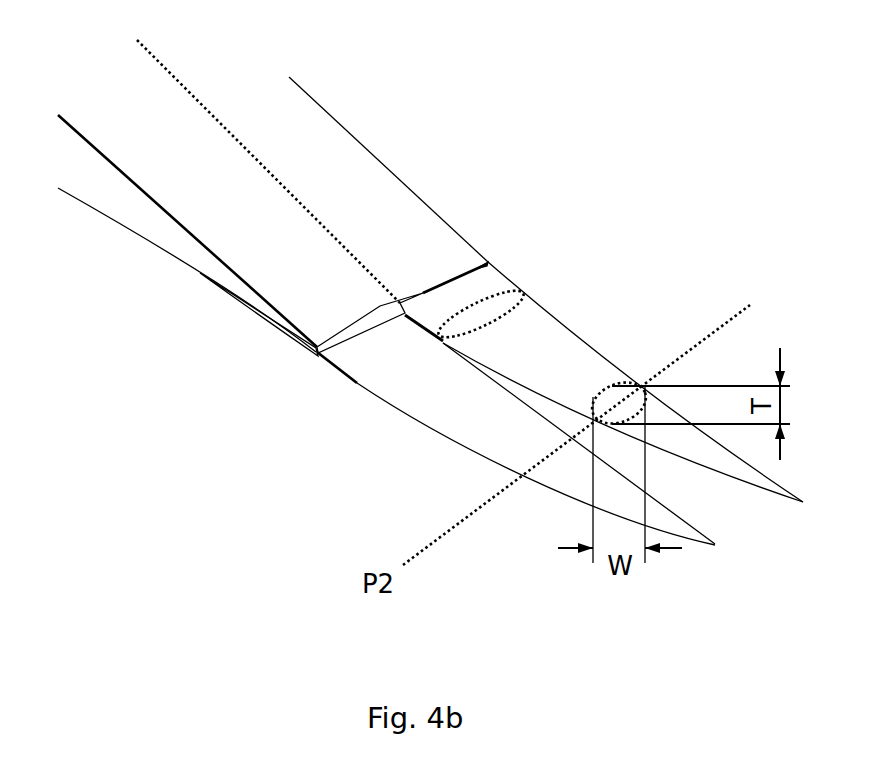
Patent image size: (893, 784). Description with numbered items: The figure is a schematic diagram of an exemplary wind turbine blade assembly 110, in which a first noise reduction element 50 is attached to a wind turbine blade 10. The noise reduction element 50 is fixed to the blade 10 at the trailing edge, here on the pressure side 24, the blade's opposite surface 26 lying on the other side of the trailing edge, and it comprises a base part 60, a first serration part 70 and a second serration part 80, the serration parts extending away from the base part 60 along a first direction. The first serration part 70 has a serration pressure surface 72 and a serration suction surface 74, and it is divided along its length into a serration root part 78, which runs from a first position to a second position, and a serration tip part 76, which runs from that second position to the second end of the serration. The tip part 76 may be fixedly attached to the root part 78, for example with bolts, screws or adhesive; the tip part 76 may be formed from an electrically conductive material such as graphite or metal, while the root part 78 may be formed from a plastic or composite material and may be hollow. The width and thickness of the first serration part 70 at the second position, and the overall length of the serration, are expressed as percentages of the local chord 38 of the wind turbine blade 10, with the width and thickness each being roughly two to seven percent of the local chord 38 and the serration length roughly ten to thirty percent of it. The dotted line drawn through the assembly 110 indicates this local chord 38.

The wind turbine blade 10 is at (100, 388).
The pressure side 24 is at (80, 237).
The clearance face 26 is at (372, 163).
The local chord 38 is at (220, 123).
The first noise reduction element 50 is at (713, 226).
The base part 60 is at (213, 287).
The first serration part 70 is at (600, 367).
The serration pressure surface 72 is at (749, 503).
The serration suction surface 74 is at (693, 442).
The serration tip part 76 is at (693, 433).
The serration root part 78 is at (562, 342).
The second serration part 80 is at (490, 425).
The wind turbine blade assembly 110 is at (253, 474).